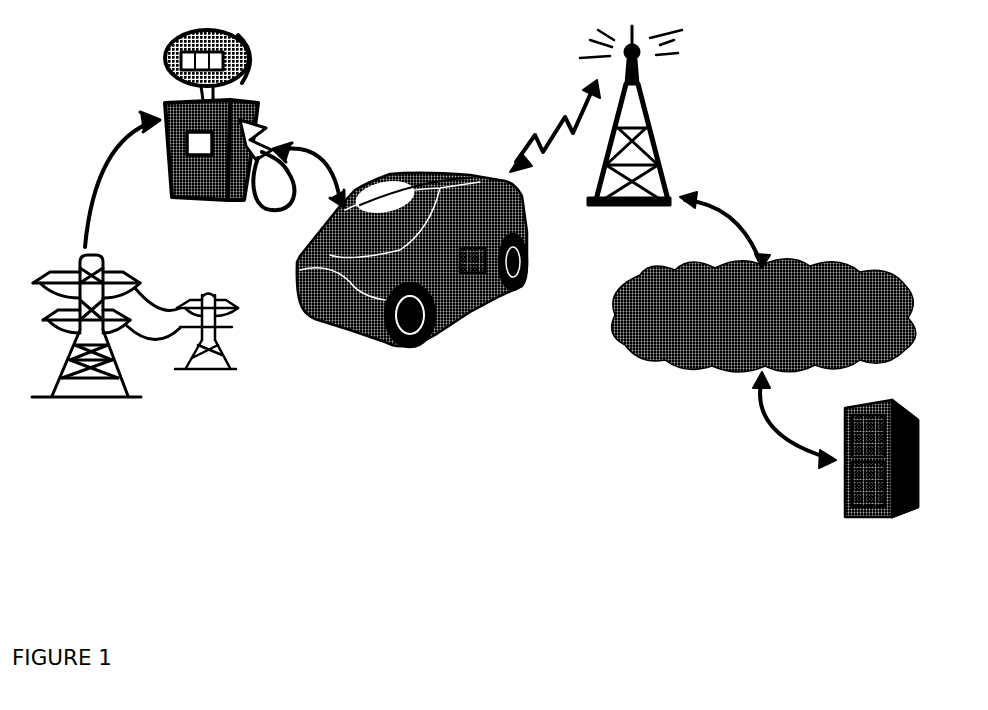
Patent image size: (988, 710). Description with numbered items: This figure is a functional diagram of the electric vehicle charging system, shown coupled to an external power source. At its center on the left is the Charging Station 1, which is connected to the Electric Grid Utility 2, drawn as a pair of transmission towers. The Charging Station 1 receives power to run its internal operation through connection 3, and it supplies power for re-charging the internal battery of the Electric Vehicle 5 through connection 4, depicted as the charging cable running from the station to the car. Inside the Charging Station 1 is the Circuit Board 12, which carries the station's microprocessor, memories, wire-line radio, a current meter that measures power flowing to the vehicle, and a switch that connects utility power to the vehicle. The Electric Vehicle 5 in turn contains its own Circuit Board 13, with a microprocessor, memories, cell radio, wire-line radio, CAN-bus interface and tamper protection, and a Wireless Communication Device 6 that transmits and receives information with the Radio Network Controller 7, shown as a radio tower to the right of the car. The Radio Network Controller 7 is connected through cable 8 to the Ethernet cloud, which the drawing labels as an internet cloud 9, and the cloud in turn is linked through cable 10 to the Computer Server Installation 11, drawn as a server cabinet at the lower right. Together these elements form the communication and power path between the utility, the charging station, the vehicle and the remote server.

The charging station 1 is at (258, 102).
The electric grid utility 2 is at (76, 256).
The connection 3 is at (102, 166).
The connection 4 is at (325, 183).
The electric vehicle 5 is at (453, 307).
The wireless communication device 6 is at (412, 164).
The radio network controller 7 is at (646, 116).
The cable 8 is at (742, 220).
The internet cloud 9 is at (656, 284).
The cable 10 is at (775, 433).
The computer server installation 11 is at (893, 400).
The circuit board 12 is at (178, 124).
The circuit board 13 is at (513, 234).